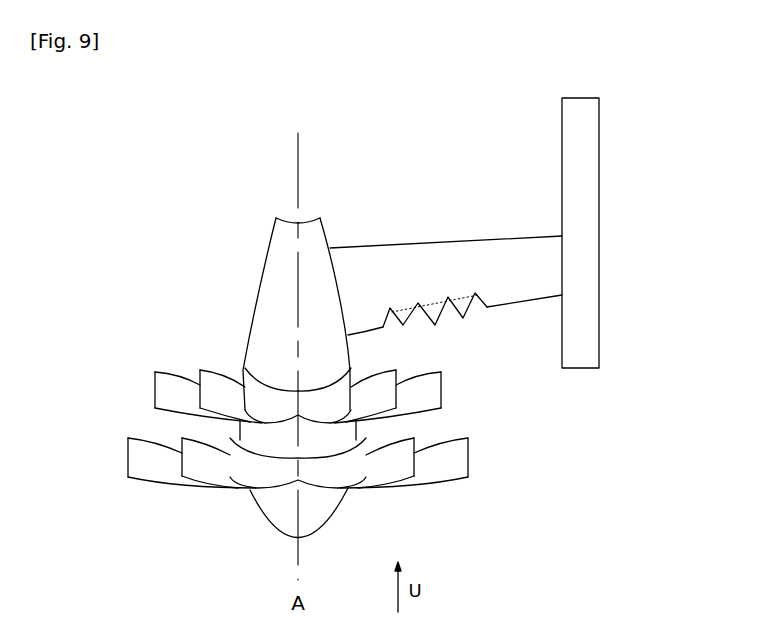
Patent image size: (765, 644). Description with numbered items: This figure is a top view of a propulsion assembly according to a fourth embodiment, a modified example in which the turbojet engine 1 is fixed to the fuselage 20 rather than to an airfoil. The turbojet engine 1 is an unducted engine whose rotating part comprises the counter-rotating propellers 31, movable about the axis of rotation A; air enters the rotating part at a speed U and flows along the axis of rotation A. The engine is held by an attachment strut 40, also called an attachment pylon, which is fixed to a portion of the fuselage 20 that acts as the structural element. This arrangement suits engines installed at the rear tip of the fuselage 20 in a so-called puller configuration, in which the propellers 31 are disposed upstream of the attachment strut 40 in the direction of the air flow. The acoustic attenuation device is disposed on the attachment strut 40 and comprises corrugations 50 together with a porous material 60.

The turbojet engine 1 is at (168, 242).
The fuselage 20 is at (603, 267).
The counter-rotating propellers 31 is at (160, 393).
The attachment strut 40 is at (407, 257).
The corrugations 50 is at (458, 333).
The porous material 60 is at (463, 297).